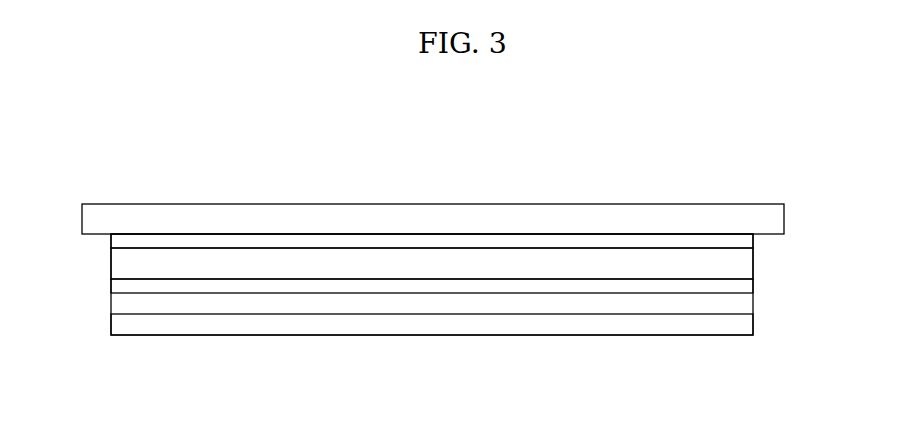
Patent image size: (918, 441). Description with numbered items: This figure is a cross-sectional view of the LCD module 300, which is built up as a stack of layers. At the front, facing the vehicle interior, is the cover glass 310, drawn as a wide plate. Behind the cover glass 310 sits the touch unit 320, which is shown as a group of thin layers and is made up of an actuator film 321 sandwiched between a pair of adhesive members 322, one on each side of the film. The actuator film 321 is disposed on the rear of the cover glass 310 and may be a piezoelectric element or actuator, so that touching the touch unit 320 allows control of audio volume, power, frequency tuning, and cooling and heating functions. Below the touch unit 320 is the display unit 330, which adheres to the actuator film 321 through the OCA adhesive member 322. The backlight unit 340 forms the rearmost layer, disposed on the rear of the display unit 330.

The LCD module 300 is at (226, 147).
The cover glass 310 is at (551, 204).
The touch unit 320 is at (506, 266).
The actuator film 321 is at (758, 262).
The adhesive members 322 is at (758, 240).
The display unit 330 is at (111, 303).
The backlight unit 340 is at (458, 335).